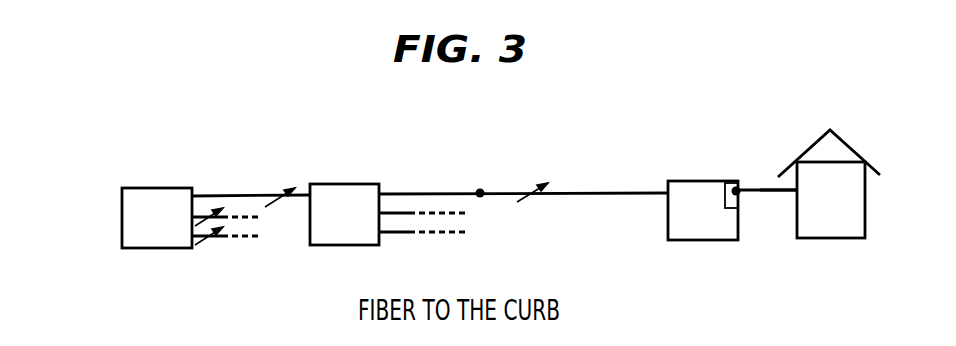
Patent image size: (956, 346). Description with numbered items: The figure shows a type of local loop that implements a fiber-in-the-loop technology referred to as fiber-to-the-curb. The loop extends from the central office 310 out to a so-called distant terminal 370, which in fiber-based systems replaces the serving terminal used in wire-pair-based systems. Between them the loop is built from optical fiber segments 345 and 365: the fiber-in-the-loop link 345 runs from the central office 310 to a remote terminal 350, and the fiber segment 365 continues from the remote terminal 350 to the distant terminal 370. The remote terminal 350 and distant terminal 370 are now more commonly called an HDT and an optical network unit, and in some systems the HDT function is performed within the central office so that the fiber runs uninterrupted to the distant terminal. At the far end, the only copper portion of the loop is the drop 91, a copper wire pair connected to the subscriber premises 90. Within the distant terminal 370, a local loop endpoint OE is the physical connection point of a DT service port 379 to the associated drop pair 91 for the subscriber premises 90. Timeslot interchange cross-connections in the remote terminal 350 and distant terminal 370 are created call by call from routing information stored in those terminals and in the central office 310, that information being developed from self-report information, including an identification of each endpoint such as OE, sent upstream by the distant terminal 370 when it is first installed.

The central office 310 is at (155, 188).
The optical fiber segment 345 is at (233, 196).
The remote terminal (RT) 350 is at (337, 184).
The optical fiber segment 365 is at (480, 192).
The distant terminal (DT) 370 is at (677, 181).
The local loop endpoint OE is at (703, 70).
The DT service port 379 is at (739, 205).
The drop pair 91 is at (767, 188).
The subscriber premises 90 is at (820, 142).